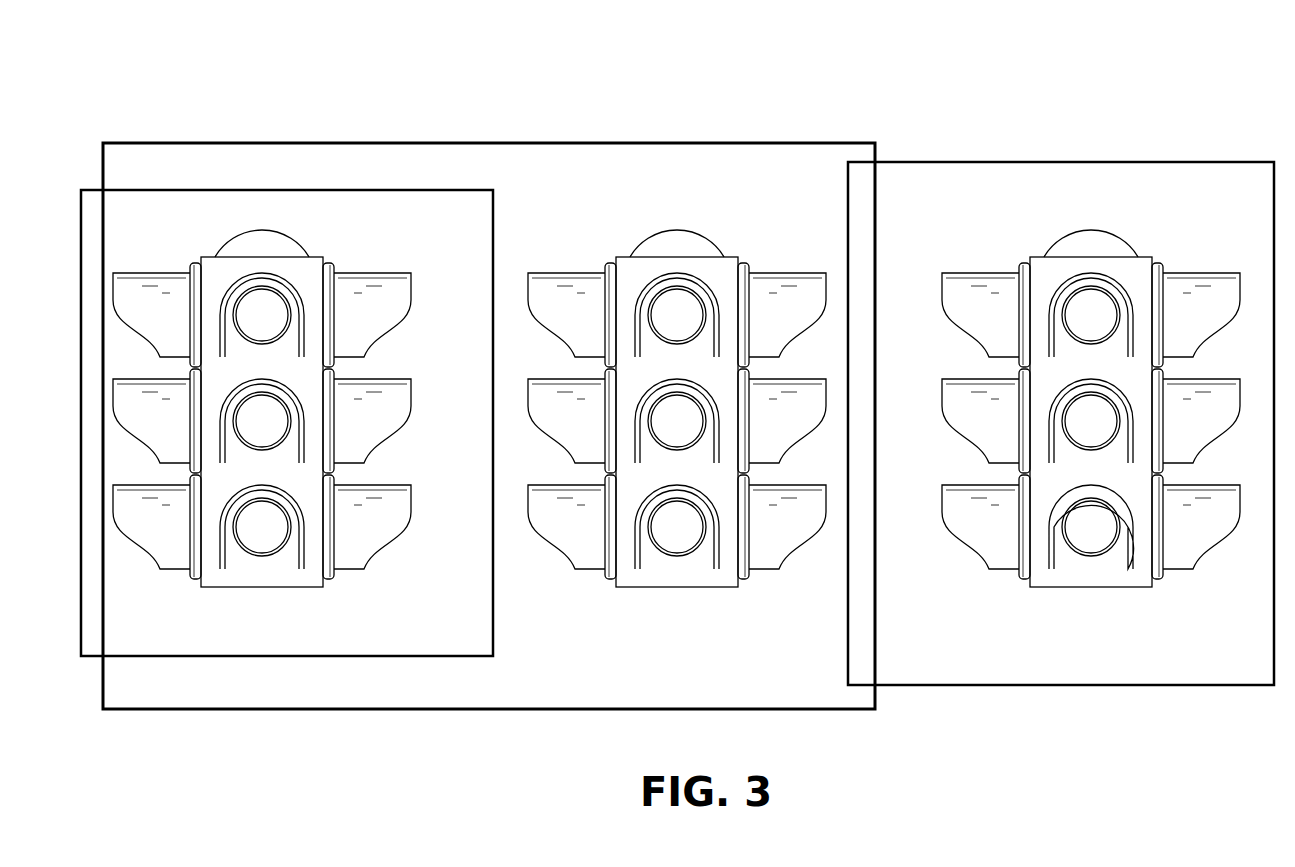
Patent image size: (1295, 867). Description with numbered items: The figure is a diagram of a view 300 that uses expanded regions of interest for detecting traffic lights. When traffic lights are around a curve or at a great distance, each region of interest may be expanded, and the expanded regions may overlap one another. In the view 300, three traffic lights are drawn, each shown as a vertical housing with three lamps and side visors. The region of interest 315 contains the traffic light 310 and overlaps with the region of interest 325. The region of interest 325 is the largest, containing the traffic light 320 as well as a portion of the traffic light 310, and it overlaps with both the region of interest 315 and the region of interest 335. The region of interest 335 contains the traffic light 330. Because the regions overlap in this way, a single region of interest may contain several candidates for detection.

The view 300 is at (290, 78).
The traffic light 310 is at (213, 257).
The region of interest 315 is at (125, 656).
The traffic light 320 is at (622, 257).
The region of interest 325 is at (372, 709).
The traffic light 330 is at (1037, 257).
The region of interest 335 is at (1060, 685).